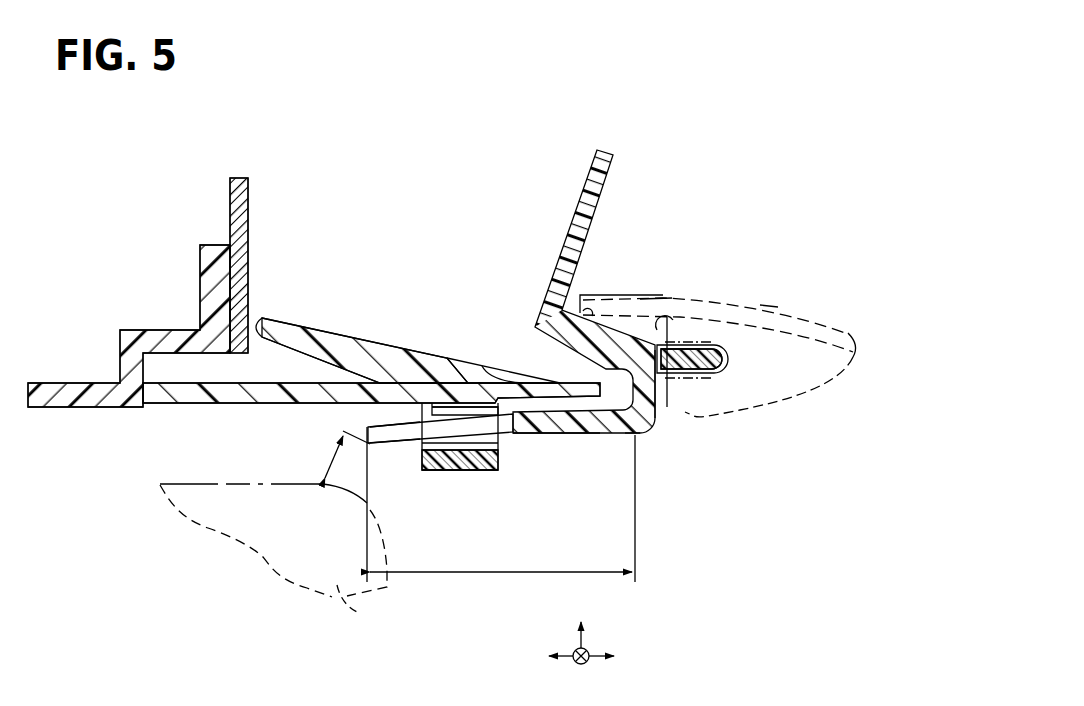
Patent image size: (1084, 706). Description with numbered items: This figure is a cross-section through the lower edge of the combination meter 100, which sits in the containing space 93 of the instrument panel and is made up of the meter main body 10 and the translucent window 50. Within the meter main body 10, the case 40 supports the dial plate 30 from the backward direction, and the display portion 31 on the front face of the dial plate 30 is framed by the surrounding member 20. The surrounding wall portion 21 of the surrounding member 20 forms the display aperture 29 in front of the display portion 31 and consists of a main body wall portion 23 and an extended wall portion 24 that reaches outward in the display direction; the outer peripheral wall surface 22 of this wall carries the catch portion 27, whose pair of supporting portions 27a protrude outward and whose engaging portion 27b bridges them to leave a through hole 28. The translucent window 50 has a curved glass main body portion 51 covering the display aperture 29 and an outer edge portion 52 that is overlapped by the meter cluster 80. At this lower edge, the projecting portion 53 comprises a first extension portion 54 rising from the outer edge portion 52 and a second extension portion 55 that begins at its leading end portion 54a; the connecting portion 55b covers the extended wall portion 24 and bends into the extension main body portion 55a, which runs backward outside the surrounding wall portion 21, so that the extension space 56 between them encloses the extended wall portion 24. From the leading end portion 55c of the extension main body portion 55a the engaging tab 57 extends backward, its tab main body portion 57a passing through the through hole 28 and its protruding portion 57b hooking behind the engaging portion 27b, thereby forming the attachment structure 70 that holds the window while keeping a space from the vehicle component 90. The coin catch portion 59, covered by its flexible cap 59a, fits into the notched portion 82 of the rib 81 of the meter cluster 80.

The combination meter 100 is at (654, 127).
The meter main body 10 is at (312, 112).
The case 40 is at (197, 244).
The dial plate 30 is at (229, 230).
The display portion 31 is at (249, 224).
The surrounding member 20 is at (277, 312).
The outer peripheral wall surface 22 is at (195, 405).
The surrounding wall portion 21 is at (467, 303).
The main body wall portion 23 is at (386, 376).
The extended wall portion 24 is at (480, 366).
The translucent window 50 is at (563, 186).
The glass main body portion 51 is at (612, 172).
The outer edge portion 52 is at (565, 306).
The second extension portion 55 is at (720, 428).
The extension main body portion 55a is at (641, 440).
The connecting portion 55b is at (657, 404).
The leading end portion 55c is at (522, 431).
The extension space 56 is at (590, 364).
The attachment structure 70 is at (493, 527).
The engaging tab 57 is at (446, 471).
The tab main body portion 57a is at (400, 410).
The protruding portion 57b is at (392, 446).
The catch portion 27 is at (473, 471).
The supporting portion 27a is at (497, 458).
The engaging portion 27b is at (500, 470).
The through hole 28 is at (492, 468).
The meter cluster 80 is at (773, 290).
The rib 81 is at (672, 299).
The notched portion 82 is at (778, 309).
The projecting portion 53 is at (660, 336).
The display aperture 29 is at (667, 393).
The coin catch portion 59 is at (717, 377).
The cap 59a is at (731, 364).
The first extension portion 54 is at (706, 352).
The leading end portion 54a is at (691, 347).
The vehicle component 90 is at (357, 612).
The containing space 93 is at (165, 441).